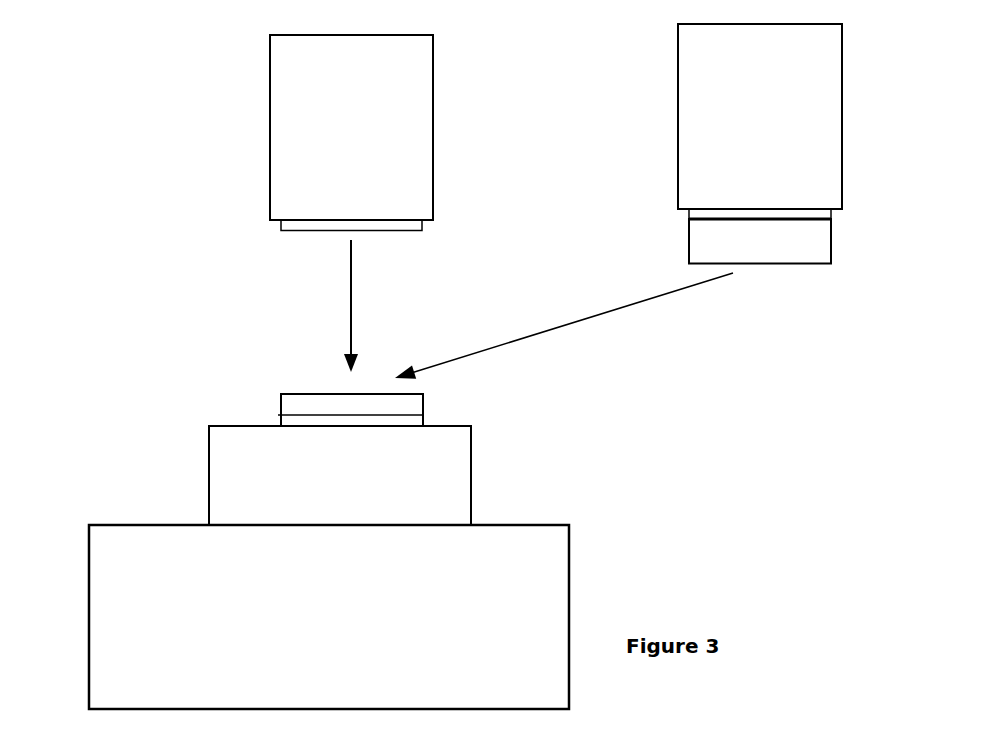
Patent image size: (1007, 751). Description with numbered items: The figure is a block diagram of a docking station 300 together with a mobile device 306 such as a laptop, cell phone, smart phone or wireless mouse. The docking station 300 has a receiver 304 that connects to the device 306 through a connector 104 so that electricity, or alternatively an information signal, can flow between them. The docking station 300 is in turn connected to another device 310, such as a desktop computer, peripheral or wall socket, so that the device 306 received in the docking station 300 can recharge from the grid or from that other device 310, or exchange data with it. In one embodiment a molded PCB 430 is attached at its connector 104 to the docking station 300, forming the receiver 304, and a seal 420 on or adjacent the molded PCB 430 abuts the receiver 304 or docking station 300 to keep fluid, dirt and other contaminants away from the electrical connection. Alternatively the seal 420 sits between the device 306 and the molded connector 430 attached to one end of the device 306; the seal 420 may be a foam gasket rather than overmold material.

The connector 104 is at (275, 233).
The docking station 300 is at (167, 470).
The receiver 304 is at (418, 391).
The device 306 is at (376, 144).
The other device 310 is at (481, 606).
The seal 420 is at (818, 214).
The molded PCB 430 is at (795, 240).